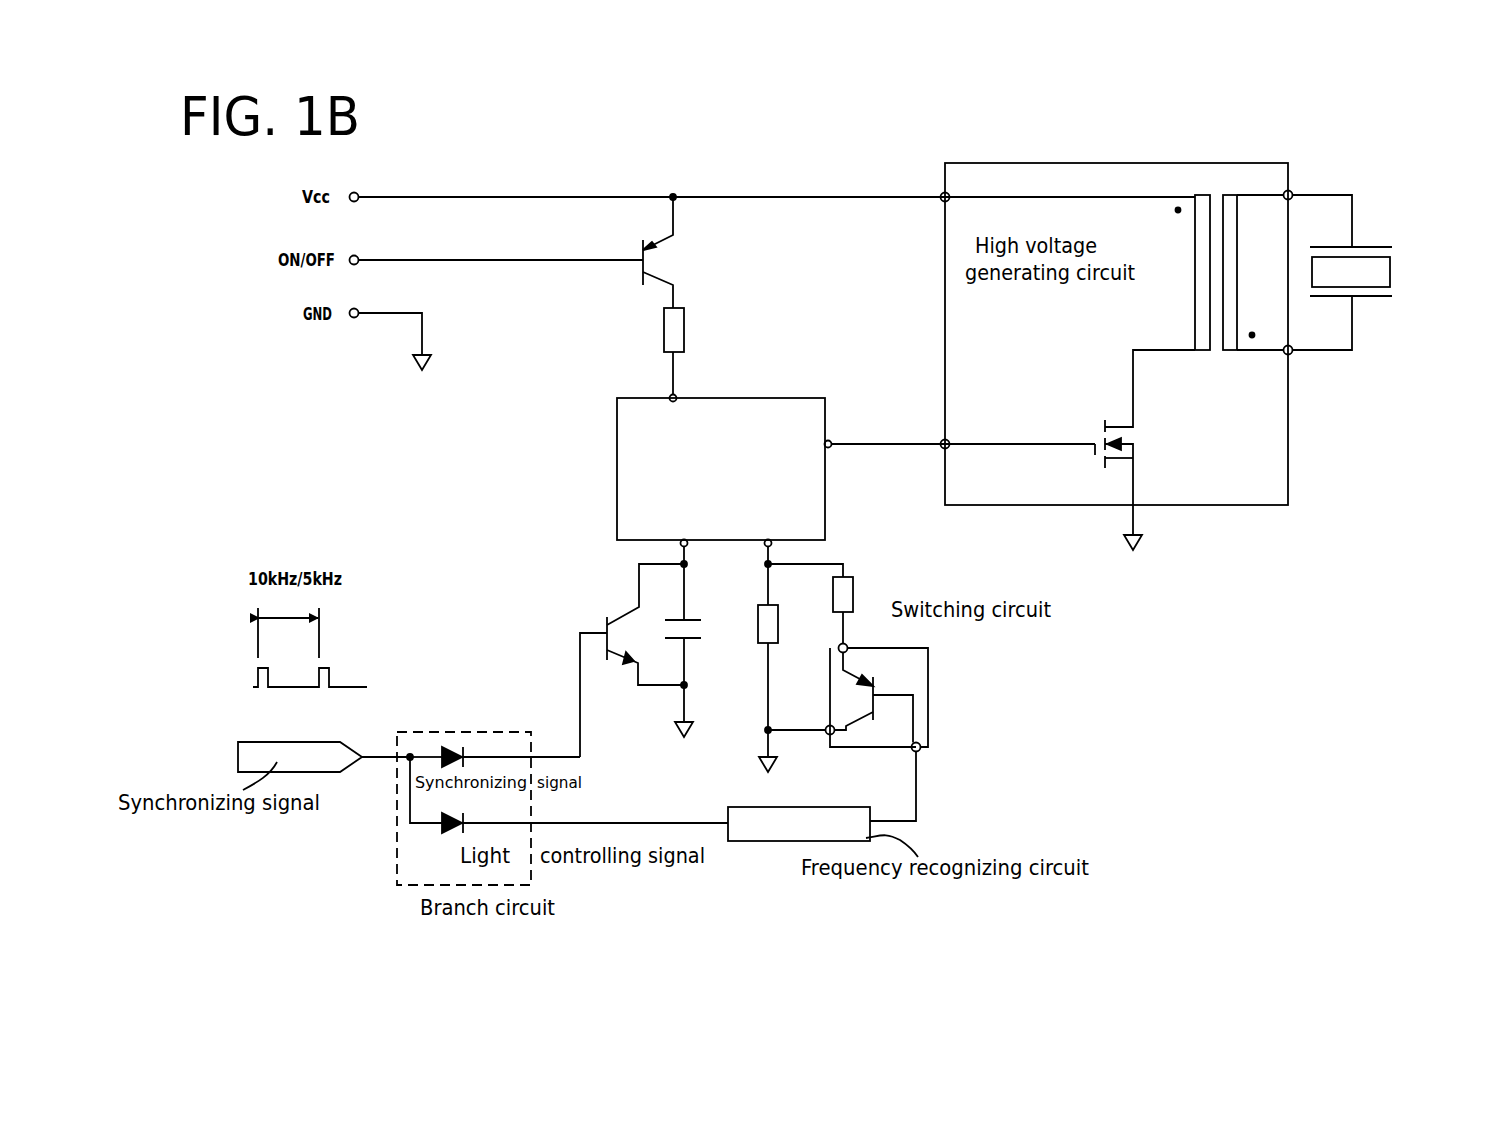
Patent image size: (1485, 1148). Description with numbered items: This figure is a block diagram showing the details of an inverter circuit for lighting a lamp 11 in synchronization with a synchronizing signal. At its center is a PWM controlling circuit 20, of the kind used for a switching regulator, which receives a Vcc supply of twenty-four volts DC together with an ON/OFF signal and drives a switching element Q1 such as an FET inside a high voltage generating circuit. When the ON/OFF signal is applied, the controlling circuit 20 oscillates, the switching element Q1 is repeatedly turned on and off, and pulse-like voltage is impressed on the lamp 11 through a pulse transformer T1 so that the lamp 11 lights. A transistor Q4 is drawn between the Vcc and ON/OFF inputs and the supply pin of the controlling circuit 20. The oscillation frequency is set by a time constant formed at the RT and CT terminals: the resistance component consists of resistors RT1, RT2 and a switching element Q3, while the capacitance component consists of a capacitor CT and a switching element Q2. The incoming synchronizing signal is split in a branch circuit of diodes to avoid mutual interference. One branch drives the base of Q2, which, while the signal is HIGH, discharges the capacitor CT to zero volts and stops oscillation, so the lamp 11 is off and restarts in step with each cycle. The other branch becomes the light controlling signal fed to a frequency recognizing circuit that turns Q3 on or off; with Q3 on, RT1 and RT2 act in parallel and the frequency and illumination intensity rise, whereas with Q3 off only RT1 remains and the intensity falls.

The lamp 11 is at (1400, 272).
The PWM controlling circuit 20 is at (826, 493).
The switching element Q1 is at (1145, 442).
The switching element Q2 is at (627, 660).
The switching element Q3 is at (849, 712).
The on/off transistor Q4 is at (681, 251).
The pulse transformer T1 is at (1222, 272).
The capacitor CT is at (694, 634).
The resistor RT1 is at (786, 651).
The resistor RT2 is at (825, 600).